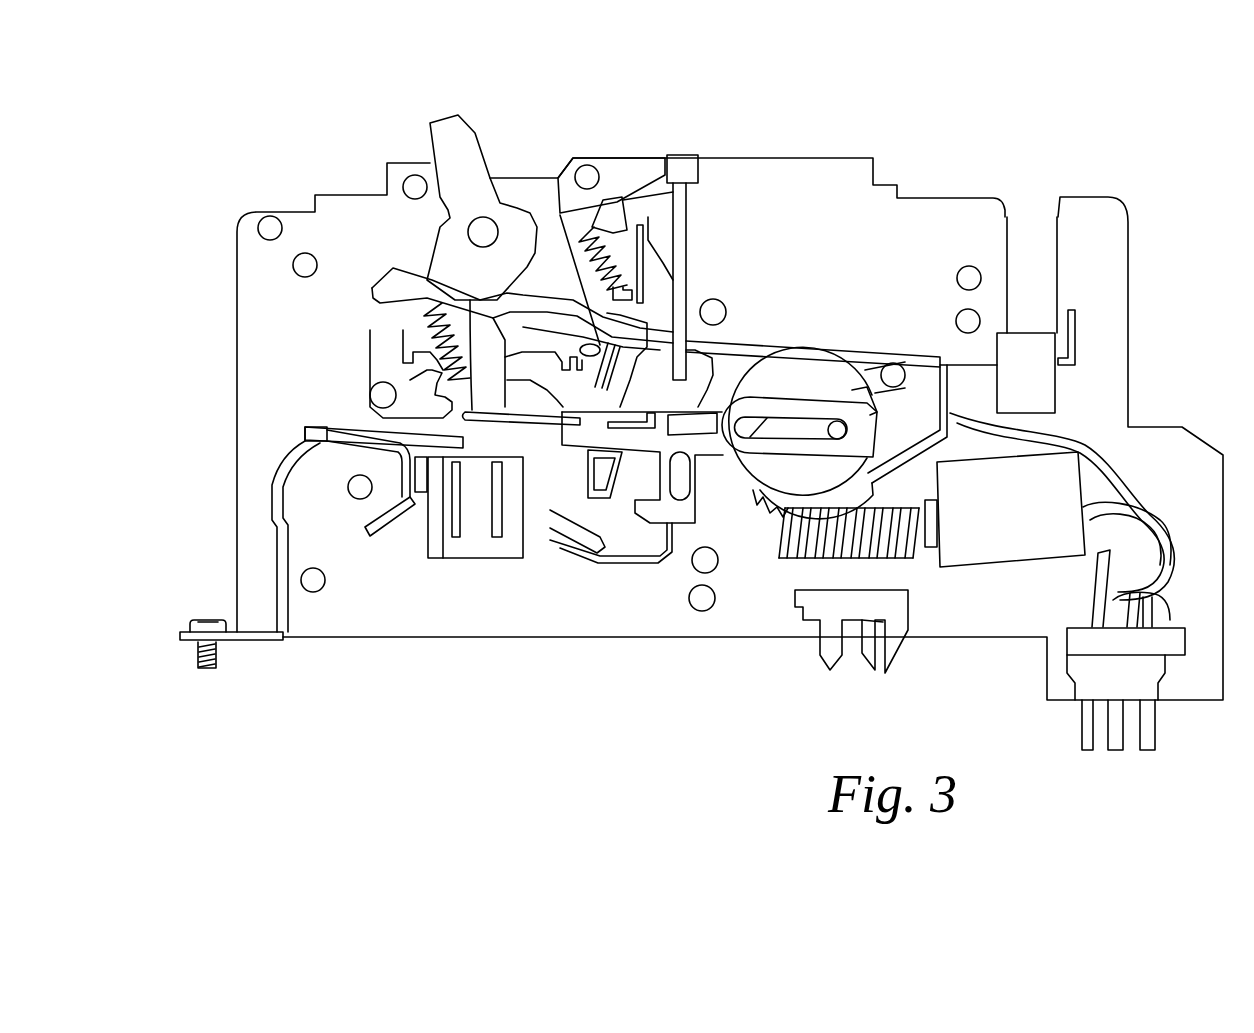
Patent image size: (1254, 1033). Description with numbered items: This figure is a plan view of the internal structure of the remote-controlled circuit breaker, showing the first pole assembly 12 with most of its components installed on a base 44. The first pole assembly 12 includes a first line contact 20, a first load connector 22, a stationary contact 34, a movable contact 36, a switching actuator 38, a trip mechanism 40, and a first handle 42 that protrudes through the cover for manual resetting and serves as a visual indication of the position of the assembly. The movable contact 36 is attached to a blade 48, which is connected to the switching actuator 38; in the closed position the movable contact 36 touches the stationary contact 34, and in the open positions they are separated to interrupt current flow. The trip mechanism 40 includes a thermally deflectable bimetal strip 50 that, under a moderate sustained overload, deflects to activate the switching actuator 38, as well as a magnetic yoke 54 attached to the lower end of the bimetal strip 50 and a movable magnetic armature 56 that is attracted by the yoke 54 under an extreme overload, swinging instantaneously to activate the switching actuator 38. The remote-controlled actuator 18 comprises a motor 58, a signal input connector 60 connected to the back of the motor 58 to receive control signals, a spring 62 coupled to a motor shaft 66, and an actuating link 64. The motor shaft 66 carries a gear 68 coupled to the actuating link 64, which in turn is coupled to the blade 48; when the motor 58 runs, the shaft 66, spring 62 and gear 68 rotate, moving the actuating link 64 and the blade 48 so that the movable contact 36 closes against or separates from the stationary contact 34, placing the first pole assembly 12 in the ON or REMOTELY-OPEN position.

The first pole assembly 12 is at (224, 125).
The remote-controlled actuator 18 is at (938, 585).
The first line contact 20 is at (257, 640).
The first load connector 22 is at (1040, 380).
The stationary contact 34 is at (383, 520).
The movable contact 36 is at (387, 520).
The switching actuator 38 is at (463, 322).
The trip mechanism 40 is at (563, 272).
The first handle 42 is at (442, 152).
The base 44 is at (247, 267).
The blade 48 is at (347, 420).
The bimetal strip 50 is at (623, 210).
The magnetic yoke 54 is at (645, 316).
The movable magnetic armature 56 is at (560, 300).
The motor 58 is at (1010, 552).
The signal input connector 60 is at (1098, 685).
The spring 62 is at (795, 545).
The actuating link 64 is at (573, 440).
The motor shaft 66 is at (925, 540).
The gear 68 is at (770, 490).